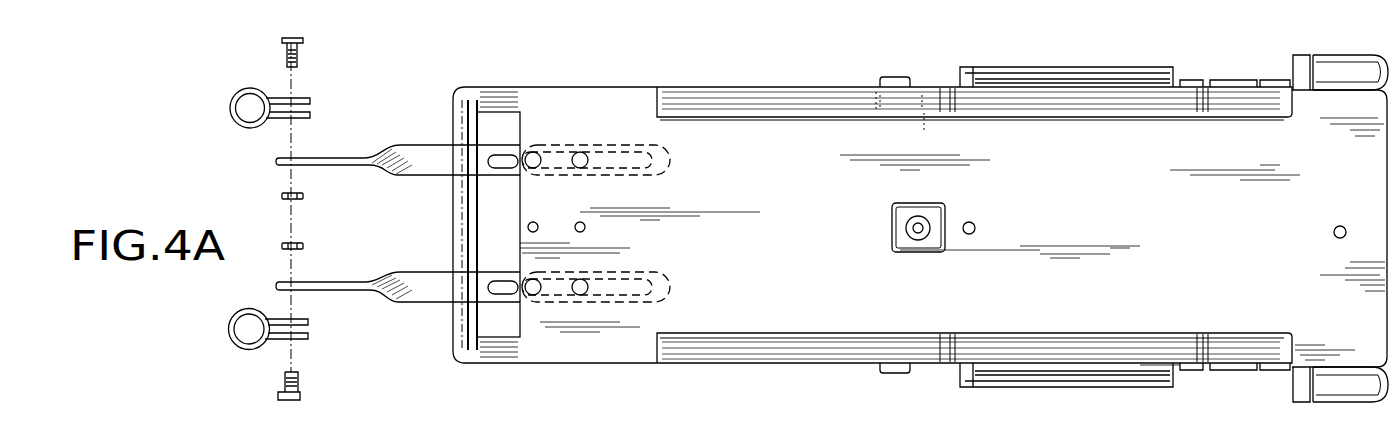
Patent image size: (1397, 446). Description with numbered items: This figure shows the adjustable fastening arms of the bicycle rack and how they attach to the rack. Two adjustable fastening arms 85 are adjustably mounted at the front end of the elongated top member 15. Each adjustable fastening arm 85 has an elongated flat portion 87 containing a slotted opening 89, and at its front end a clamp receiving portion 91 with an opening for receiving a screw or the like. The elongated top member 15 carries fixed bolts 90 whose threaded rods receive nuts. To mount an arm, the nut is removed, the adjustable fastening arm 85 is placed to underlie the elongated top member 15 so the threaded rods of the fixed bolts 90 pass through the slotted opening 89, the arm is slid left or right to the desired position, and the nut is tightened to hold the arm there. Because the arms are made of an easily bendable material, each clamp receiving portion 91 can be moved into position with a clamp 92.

The elongated top member 15 is at (866, 239).
The adjustable fastening arm 85 is at (415, 155).
The elongated flat portion 87 is at (669, 158).
The slotted opening 89 is at (627, 160).
The fixed bolt 90 is at (536, 154).
The clamp receiving portion 91 is at (340, 158).
The clamp 92 is at (233, 117).